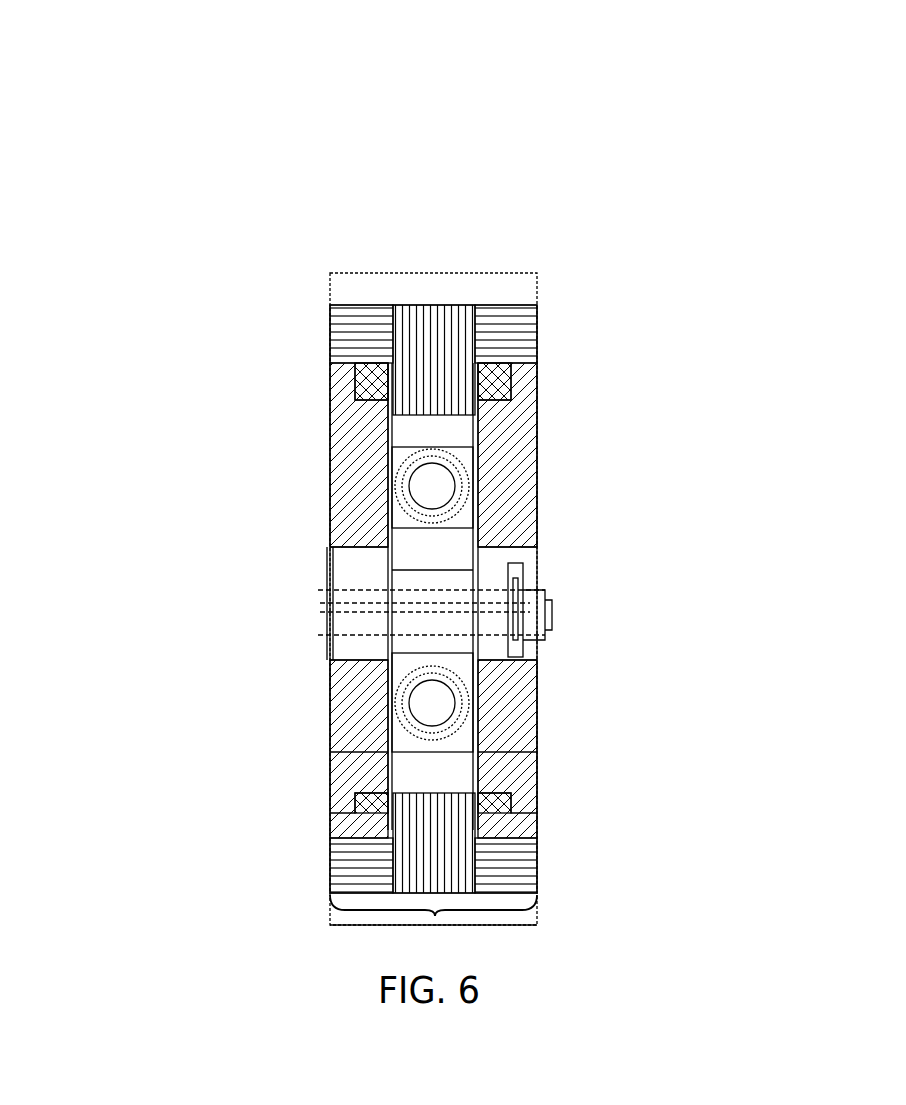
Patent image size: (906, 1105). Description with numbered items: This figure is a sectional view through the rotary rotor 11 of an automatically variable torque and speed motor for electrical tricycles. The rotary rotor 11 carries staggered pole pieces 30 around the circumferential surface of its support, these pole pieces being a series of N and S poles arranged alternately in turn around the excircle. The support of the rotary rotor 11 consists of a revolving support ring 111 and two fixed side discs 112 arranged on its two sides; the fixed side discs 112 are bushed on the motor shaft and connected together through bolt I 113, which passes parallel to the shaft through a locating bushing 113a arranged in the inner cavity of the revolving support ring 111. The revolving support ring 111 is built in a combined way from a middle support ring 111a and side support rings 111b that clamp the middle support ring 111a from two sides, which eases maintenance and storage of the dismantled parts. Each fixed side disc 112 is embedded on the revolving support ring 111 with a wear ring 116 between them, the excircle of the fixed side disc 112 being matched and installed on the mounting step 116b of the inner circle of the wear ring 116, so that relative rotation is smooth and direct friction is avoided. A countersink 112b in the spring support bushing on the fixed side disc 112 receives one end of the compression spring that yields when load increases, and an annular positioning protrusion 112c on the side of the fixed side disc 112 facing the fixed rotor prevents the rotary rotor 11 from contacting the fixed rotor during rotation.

The rotary rotor 11 is at (252, 108).
The staggered pole piece 30 is at (330, 908).
The revolving support ring 111 is at (433, 925).
The middle support ring 111a is at (437, 322).
The side support ring 111b is at (343, 333).
The fixed side disc 112 is at (340, 470).
The countersink 112b is at (405, 730).
The annular positioning protrusion 112c is at (328, 517).
The bolt I 113 is at (548, 590).
The locating bushing 113a is at (445, 587).
The wear ring 116 is at (375, 368).
The mounting step 116b is at (357, 397).